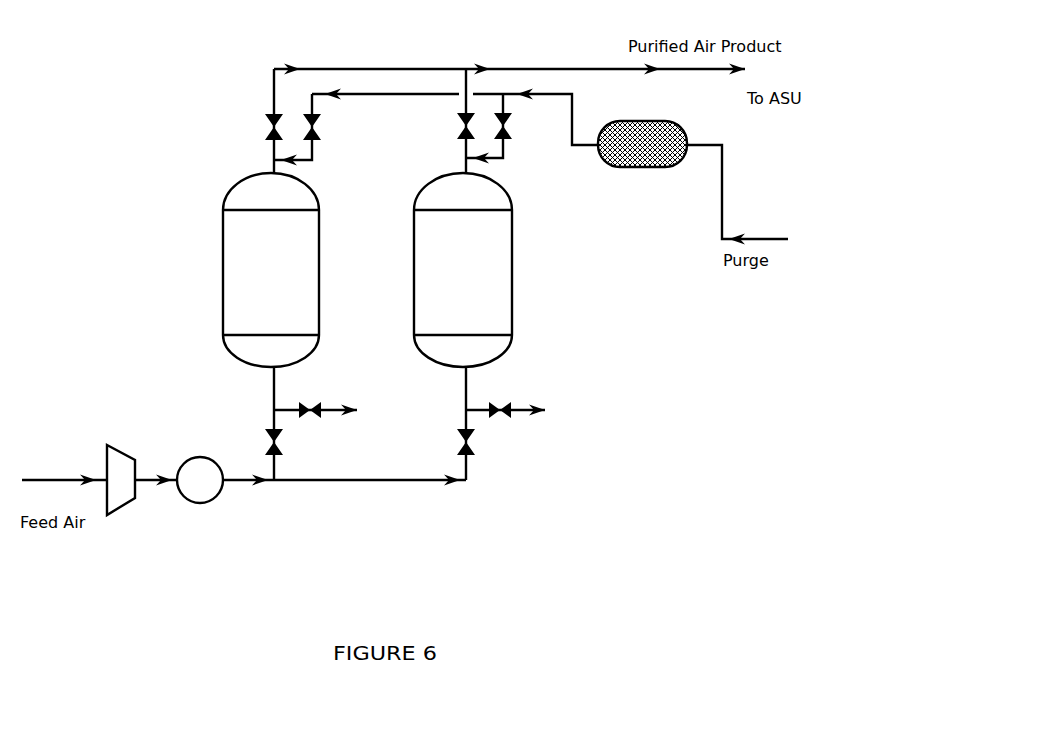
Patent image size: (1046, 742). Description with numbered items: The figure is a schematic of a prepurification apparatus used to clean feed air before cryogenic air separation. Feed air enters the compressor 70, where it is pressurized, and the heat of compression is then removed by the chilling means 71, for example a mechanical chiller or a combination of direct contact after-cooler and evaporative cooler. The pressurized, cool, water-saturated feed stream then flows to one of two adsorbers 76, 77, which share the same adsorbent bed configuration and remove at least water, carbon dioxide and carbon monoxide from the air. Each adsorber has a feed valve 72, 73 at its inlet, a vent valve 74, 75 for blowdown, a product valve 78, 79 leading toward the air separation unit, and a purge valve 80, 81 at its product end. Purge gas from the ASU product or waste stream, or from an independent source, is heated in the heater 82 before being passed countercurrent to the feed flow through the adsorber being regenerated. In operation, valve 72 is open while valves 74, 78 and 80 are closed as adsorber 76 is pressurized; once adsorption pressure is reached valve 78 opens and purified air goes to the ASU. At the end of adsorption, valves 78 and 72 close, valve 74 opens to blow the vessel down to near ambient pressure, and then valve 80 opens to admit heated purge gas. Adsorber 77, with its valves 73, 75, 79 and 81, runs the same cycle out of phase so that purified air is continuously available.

The compressor 70 is at (121, 480).
The chilling means 71 is at (200, 480).
The valve 72 is at (262, 442).
The valve 73 is at (455, 442).
The valve 74 is at (334, 403).
The valve 75 is at (525, 403).
The adsorber 76 is at (271, 270).
The adsorber 77 is at (463, 270).
The valve 78 is at (263, 127).
The valve 79 is at (455, 126).
The valve 80 is at (326, 127).
The valve 81 is at (517, 126).
The heater 82 is at (642, 161).